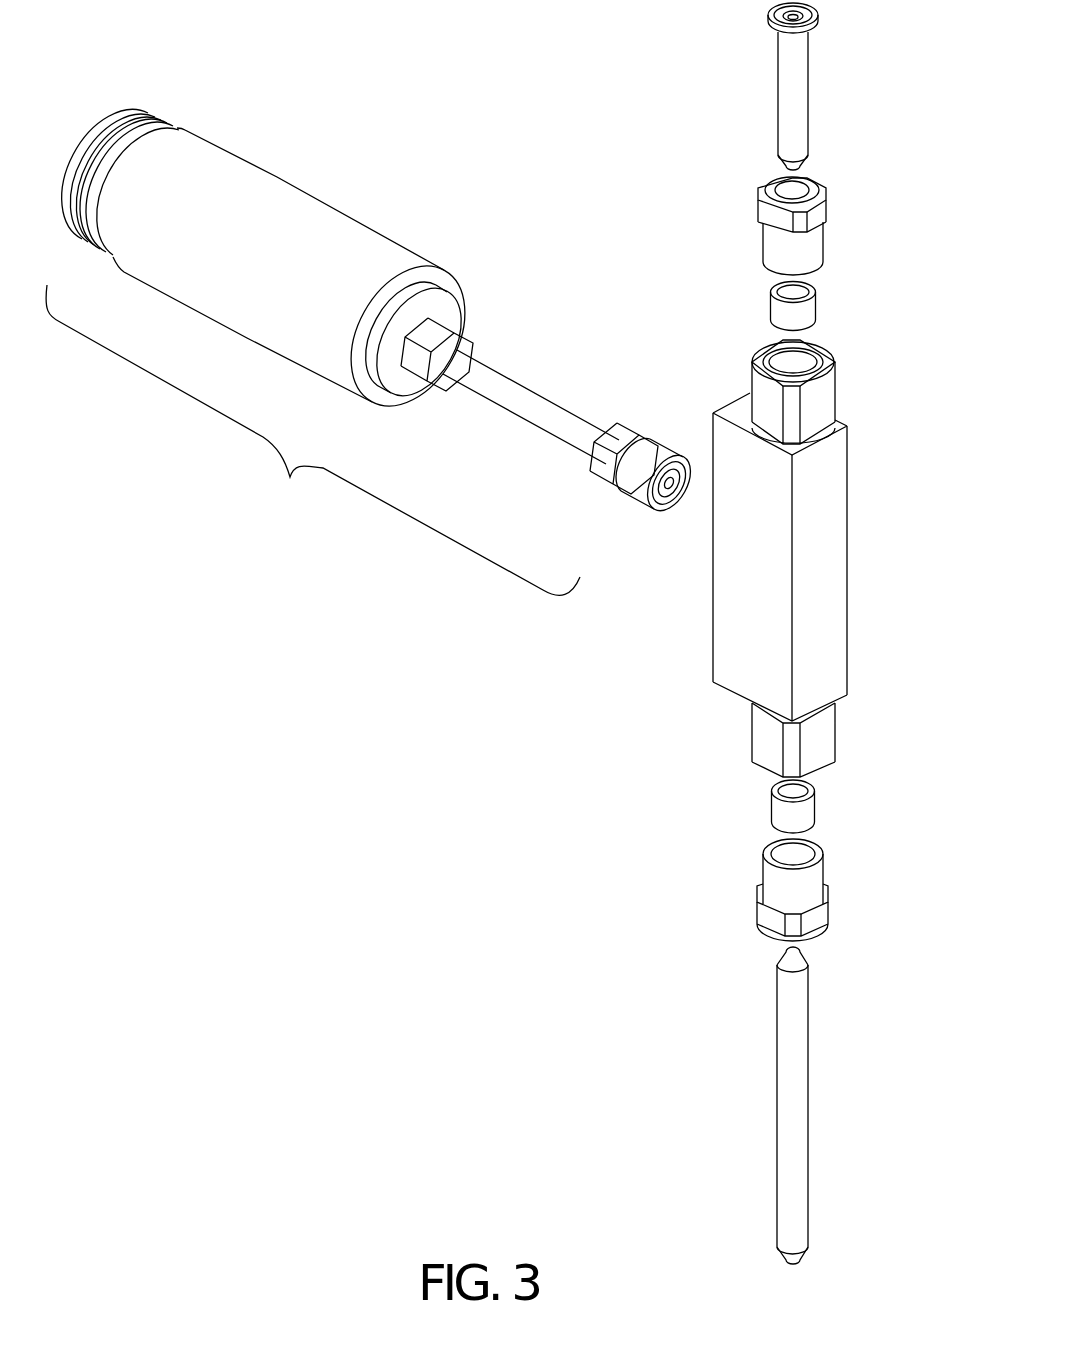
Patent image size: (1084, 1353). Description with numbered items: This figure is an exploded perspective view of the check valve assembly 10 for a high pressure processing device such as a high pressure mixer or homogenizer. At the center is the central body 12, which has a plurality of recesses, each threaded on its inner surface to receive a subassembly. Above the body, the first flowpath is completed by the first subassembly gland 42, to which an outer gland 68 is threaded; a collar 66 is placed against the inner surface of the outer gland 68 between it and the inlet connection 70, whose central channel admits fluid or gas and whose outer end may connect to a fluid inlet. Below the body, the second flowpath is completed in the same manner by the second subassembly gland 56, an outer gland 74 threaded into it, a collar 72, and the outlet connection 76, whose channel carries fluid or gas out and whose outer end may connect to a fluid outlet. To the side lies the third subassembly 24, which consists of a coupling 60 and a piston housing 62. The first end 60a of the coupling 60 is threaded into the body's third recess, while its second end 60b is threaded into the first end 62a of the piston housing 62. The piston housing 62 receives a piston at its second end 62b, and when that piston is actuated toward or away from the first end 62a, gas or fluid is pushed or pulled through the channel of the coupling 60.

The check valve assembly 10 is at (915, 168).
The central body 12 is at (827, 557).
The third subassembly 24 is at (737, 410).
The first subassembly gland 42 is at (823, 397).
The second subassembly gland 56 is at (823, 735).
The coupling 60 is at (537, 403).
The first end of coupling 60a is at (637, 483).
The second end of coupling 60b is at (448, 383).
The piston housing 62 is at (272, 207).
The first end of piston housing 62a is at (438, 303).
The second end of piston housing 62b is at (88, 132).
The collar 66 is at (803, 313).
The outer gland 68 is at (805, 248).
The inlet connection 70 is at (797, 93).
The collar 72 is at (805, 813).
The outer gland 74 is at (810, 880).
The outlet connection 76 is at (797, 1090).